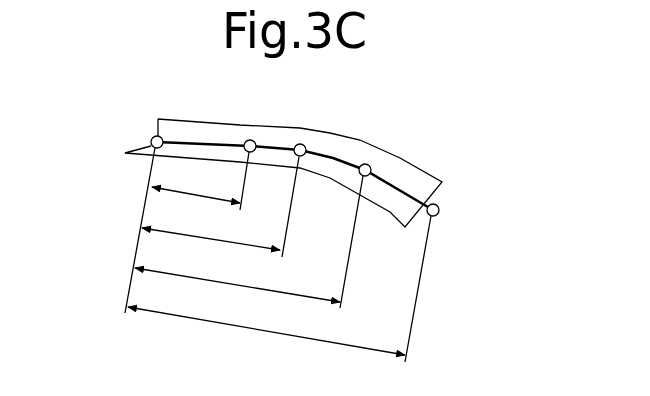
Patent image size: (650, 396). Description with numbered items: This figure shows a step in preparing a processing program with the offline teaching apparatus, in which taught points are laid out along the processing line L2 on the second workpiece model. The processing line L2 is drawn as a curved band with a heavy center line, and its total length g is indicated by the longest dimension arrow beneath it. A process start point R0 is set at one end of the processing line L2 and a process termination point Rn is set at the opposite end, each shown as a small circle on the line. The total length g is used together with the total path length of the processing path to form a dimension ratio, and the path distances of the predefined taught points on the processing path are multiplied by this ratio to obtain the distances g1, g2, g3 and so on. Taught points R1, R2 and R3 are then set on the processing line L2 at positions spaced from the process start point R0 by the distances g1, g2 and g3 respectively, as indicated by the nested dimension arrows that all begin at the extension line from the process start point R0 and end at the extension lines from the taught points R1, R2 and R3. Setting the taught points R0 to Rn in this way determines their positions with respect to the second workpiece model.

The process start point R0 is at (153, 137).
The taught point R1 is at (254, 141).
The taught point R2 is at (304, 145).
The taught point R3 is at (369, 165).
The process termination point Rn is at (439, 208).
The processing line L2 is at (213, 136).
The distance g1 is at (196, 184).
The distance g2 is at (211, 230).
The distance g3 is at (237, 279).
The total length g is at (266, 330).